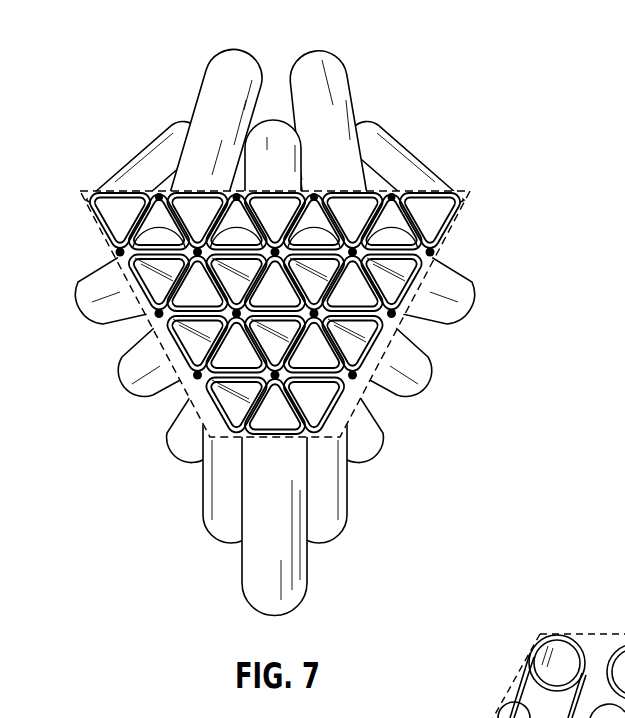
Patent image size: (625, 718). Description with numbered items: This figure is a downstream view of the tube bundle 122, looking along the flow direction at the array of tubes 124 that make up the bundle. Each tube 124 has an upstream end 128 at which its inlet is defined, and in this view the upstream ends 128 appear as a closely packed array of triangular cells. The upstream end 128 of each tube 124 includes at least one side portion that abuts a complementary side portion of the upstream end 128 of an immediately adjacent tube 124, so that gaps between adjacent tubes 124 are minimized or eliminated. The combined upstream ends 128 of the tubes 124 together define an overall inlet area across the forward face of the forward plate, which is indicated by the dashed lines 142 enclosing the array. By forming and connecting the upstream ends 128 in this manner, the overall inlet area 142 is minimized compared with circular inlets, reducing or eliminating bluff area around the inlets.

The tube bundle 122 is at (330, 332).
The tube 124 is at (267, 550).
The upstream end 128 is at (295, 356).
The dashed lines indicating overall inlet area 142 is at (463, 215).